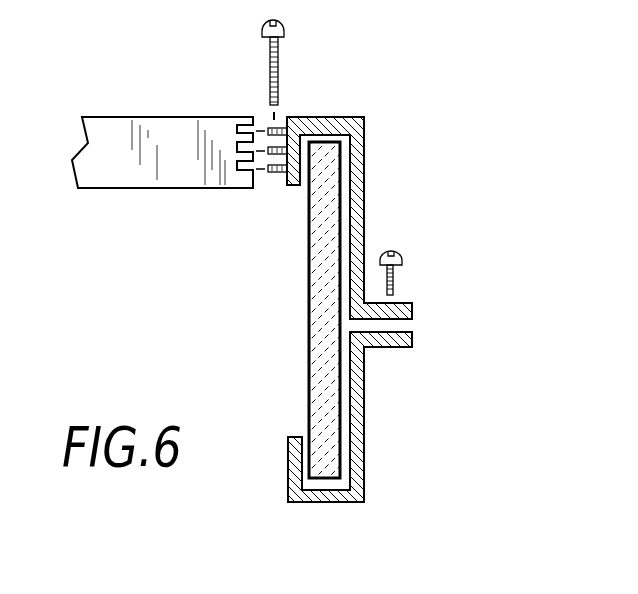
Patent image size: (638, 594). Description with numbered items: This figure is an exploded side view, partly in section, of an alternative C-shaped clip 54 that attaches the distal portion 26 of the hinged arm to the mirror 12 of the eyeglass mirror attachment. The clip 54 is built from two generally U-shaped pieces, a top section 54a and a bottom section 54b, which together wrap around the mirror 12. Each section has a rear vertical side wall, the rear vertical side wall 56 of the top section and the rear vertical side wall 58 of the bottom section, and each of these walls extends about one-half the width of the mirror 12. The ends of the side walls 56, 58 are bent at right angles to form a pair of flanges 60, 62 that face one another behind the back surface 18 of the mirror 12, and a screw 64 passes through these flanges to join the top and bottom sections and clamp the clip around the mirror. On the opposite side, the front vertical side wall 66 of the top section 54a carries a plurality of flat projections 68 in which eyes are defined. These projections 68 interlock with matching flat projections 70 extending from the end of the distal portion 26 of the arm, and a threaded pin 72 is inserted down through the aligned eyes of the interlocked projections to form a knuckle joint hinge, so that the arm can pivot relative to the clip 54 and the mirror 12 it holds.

The mirror 12 is at (325, 478).
The back surface 18 is at (345, 392).
The distal portion 26 is at (150, 115).
The C-shaped clip 54 is at (403, 220).
The top section 54a is at (364, 140).
The bottom section 54b is at (365, 478).
The rear vertical side wall 56 is at (364, 168).
The rear vertical side wall 58 is at (365, 438).
The flange 60 is at (412, 310).
The flange 62 is at (412, 339).
The screw 64 is at (402, 257).
The front vertical side wall 66 is at (302, 143).
The flat projections 68 is at (279, 173).
The flat projections 70 is at (246, 189).
The threaded pin 72 is at (278, 62).